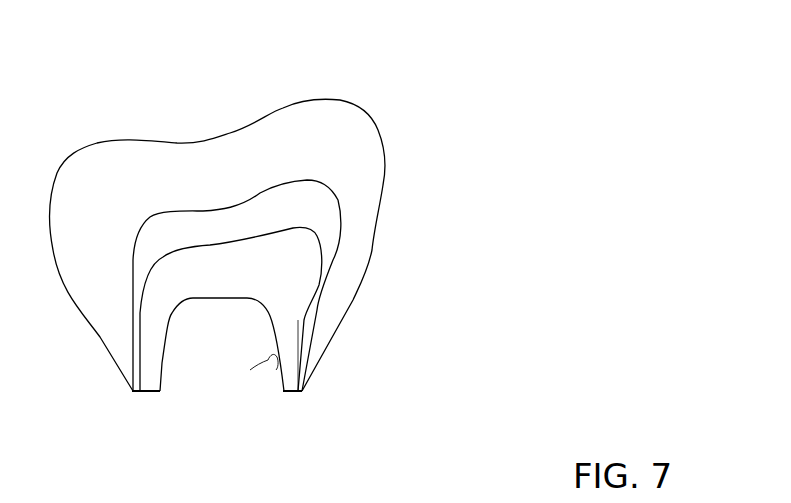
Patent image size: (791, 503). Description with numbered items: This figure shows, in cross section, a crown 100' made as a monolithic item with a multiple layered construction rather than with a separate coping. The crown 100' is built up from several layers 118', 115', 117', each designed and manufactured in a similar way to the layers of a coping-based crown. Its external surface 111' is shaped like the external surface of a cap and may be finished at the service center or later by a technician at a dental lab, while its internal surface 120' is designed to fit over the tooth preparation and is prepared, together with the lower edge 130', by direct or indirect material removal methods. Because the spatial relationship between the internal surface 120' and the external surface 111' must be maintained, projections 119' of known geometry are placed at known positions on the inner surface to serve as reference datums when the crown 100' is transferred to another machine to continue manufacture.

The crown 100' is at (374, 237).
The external surface 111' is at (217, 228).
The layer 118' is at (257, 203).
The layer 115' is at (275, 228).
The layer 117' is at (380, 295).
The projections 119' is at (336, 368).
The internal surface 120' is at (261, 413).
The lower edge 130' is at (218, 425).